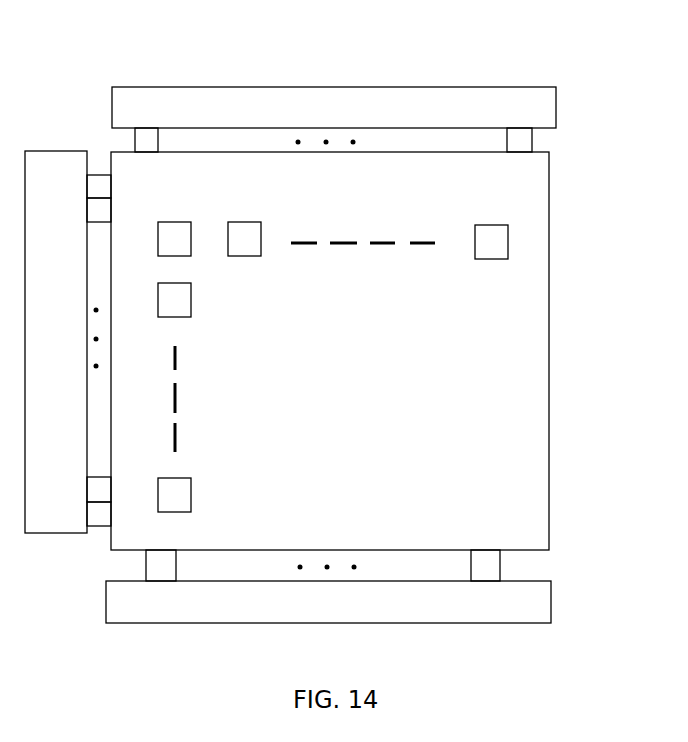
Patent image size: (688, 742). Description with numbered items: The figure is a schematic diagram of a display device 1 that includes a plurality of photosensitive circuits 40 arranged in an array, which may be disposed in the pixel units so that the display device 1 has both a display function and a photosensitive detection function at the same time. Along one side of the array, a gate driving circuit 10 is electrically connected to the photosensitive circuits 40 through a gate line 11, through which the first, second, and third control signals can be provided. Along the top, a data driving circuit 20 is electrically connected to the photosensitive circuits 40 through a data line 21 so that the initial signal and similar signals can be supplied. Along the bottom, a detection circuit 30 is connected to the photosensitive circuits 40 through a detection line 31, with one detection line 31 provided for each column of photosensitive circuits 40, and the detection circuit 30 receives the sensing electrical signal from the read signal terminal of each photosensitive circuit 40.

The display device 1 is at (303, 72).
The gate driving circuit 10 is at (62, 342).
The gate line 11 is at (103, 197).
The data driving circuit 20 is at (334, 116).
The data line 21 is at (533, 143).
The detection circuit 30 is at (328, 594).
The detection line 31 is at (501, 574).
The photosensitive circuit 40 is at (508, 247).